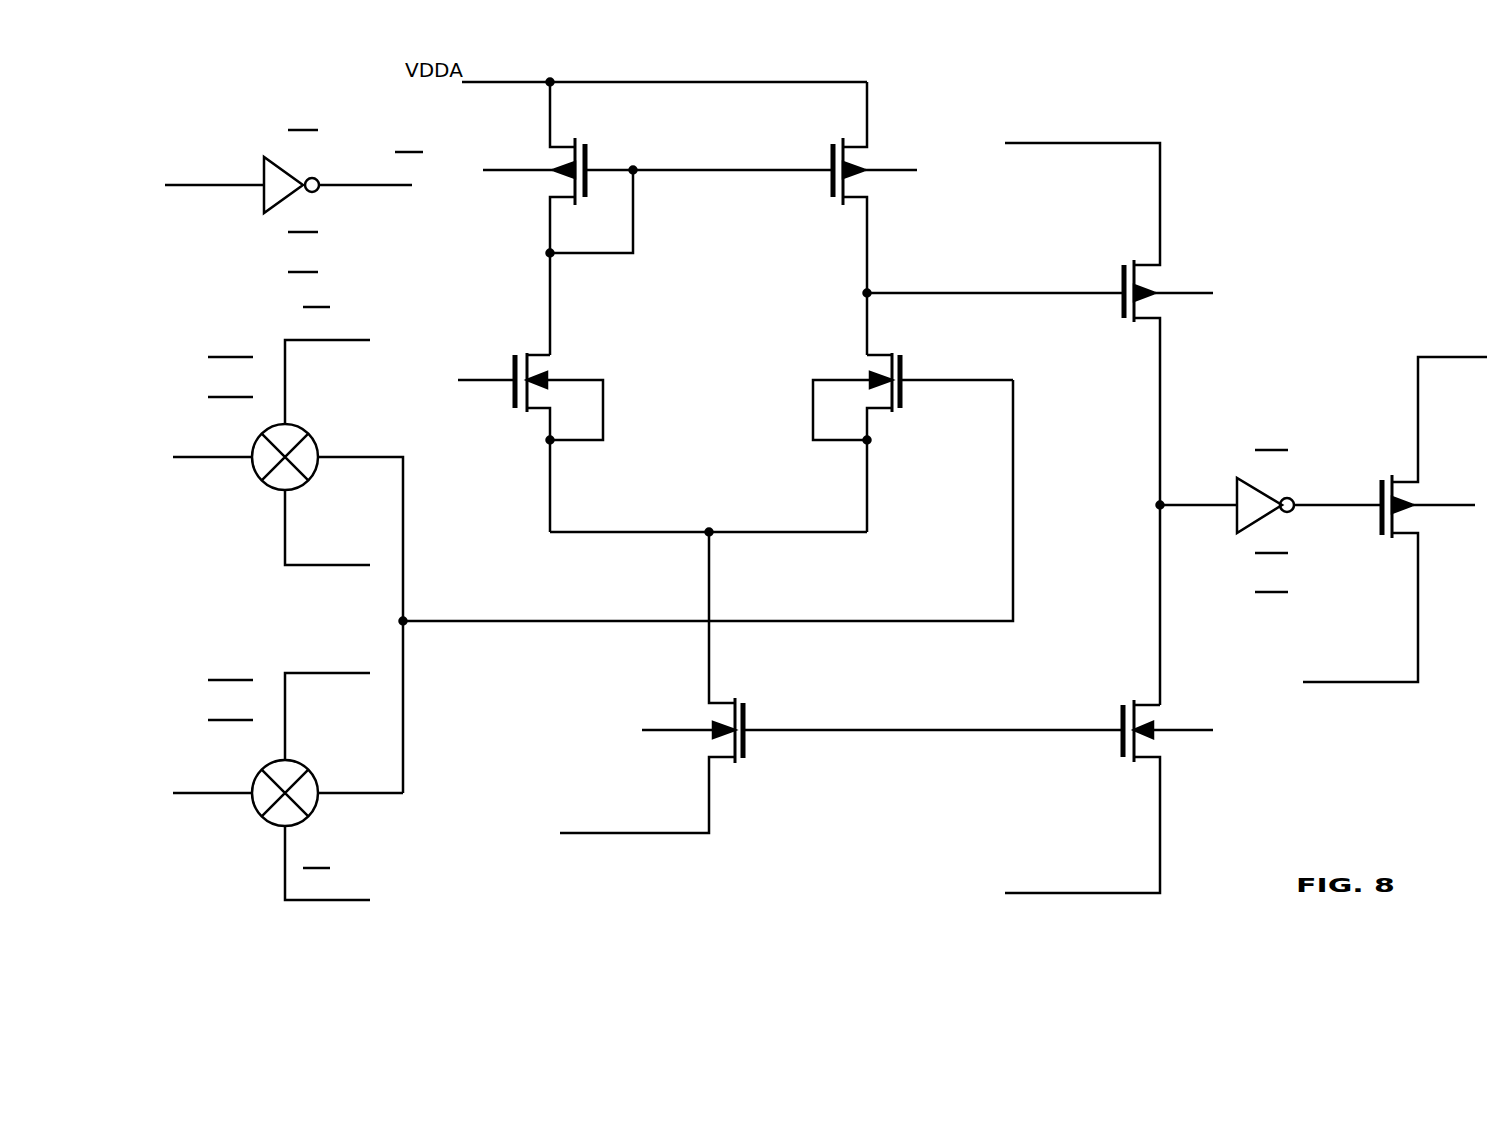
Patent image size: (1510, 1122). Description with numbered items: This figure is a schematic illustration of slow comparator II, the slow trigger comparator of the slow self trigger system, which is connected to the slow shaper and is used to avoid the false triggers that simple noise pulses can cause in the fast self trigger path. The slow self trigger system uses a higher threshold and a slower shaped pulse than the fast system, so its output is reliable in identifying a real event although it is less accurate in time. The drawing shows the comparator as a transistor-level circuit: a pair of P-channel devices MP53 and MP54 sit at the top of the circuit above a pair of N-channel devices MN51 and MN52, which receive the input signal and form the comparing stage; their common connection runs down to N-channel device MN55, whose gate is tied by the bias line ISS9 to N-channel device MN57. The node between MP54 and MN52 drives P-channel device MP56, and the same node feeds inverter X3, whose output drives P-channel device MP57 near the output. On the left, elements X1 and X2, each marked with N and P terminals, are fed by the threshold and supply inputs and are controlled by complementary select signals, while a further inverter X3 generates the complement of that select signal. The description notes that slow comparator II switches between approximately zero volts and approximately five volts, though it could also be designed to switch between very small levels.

The P-channel MOS transistor MP53 is at (650, 218).
The P-channel MOS transistor MP54 is at (964, 218).
The N-channel MOS transistor MN51 is at (524, 427).
The N-channel MOS transistor MN52 is at (913, 427).
The N-channel MOS transistor MN55 is at (668, 682).
The P-channel MOS transistor MP56 is at (1116, 410).
The N-channel MOS transistor MN57 is at (1115, 796).
The P-channel MOS transistor MP57 is at (1397, 506).
The transmission gate X1 is at (278, 774).
The transmission gate X2 is at (280, 550).
The inverter X3 is at (769, 359).
The bias current line ISS9 is at (933, 716).